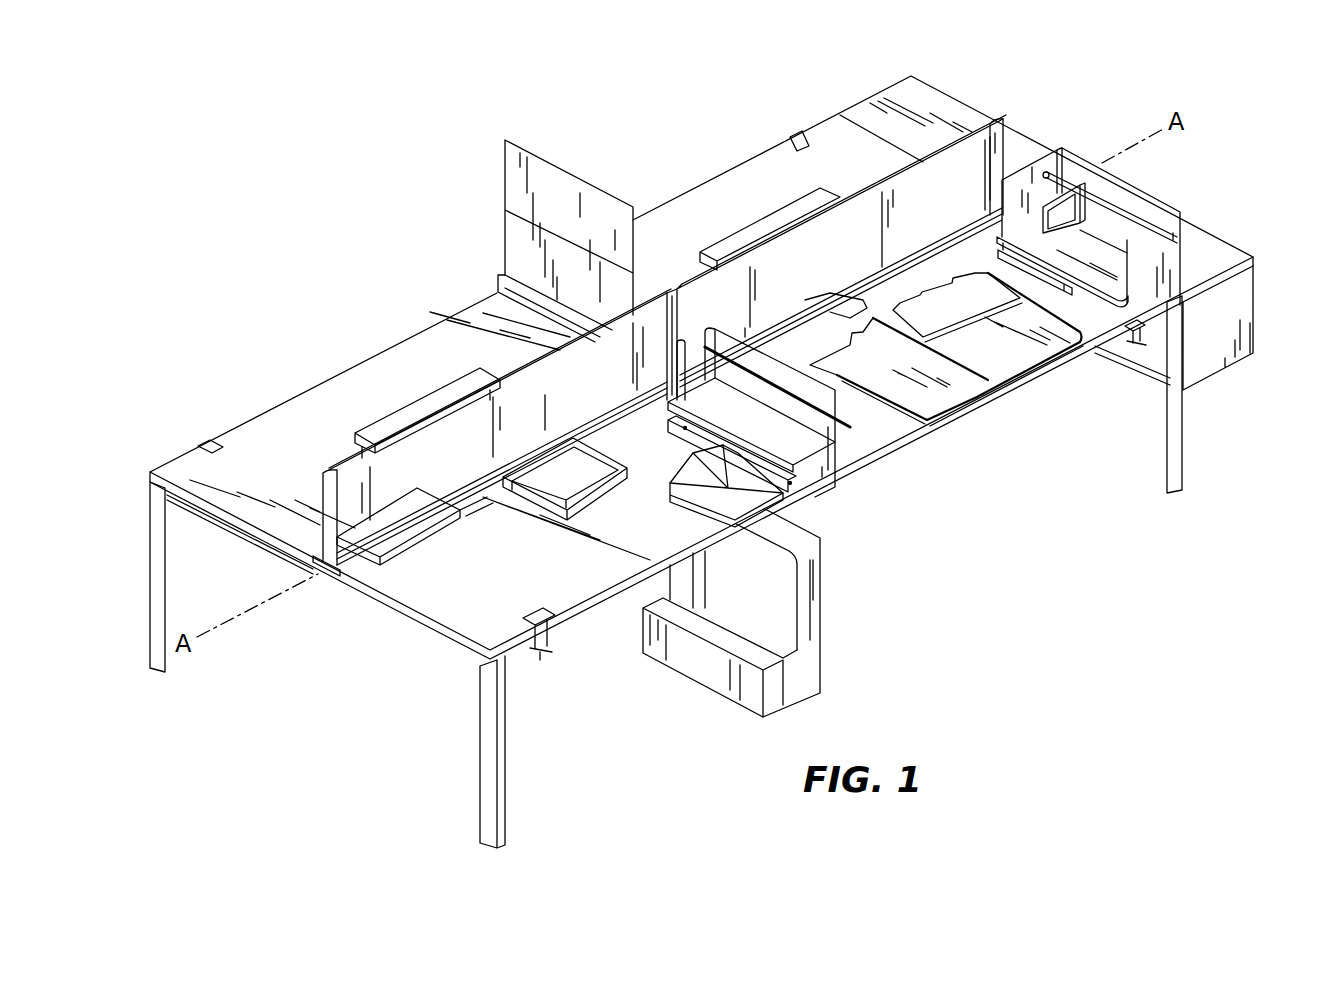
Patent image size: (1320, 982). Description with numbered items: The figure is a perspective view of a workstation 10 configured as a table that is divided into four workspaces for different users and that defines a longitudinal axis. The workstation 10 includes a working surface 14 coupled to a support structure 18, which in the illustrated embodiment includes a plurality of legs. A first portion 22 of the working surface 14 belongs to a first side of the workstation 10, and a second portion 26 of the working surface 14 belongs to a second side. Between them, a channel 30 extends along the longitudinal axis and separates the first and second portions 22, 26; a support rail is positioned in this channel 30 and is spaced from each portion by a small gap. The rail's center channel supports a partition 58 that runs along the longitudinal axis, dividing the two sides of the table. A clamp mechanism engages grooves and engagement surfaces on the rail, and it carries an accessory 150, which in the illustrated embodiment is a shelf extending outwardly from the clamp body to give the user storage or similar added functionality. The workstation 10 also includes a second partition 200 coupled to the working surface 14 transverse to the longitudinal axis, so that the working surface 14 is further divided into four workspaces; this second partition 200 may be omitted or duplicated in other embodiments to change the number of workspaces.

The workstation 10 is at (268, 272).
The working surface 14 is at (430, 358).
The support structure 18 is at (500, 802).
The first portion 22 is at (243, 448).
The second portion 26 is at (548, 602).
The channel 30 is at (333, 578).
The partition 58 is at (802, 262).
The accessory 150 is at (387, 533).
The second partition 200 is at (575, 197).